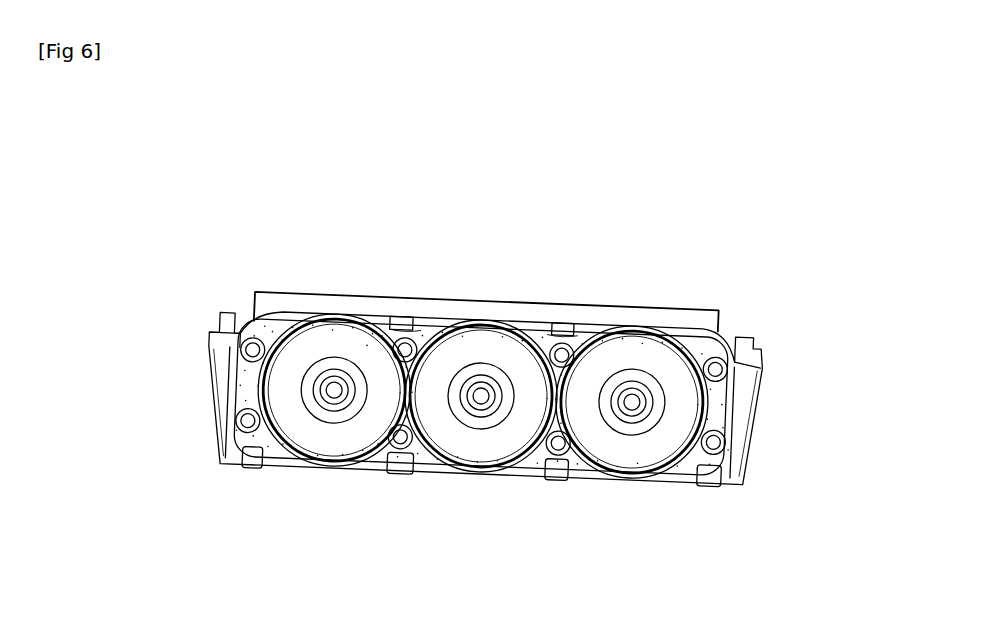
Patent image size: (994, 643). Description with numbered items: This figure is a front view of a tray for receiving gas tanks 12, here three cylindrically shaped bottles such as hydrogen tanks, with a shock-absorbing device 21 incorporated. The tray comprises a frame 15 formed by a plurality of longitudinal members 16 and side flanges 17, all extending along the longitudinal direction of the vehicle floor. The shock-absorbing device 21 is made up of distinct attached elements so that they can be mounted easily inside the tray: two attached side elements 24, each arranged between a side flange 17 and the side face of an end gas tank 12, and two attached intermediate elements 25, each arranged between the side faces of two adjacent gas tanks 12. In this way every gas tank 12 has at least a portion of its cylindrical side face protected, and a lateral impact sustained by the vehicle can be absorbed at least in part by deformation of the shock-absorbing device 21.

The gas tank 12 is at (308, 348).
The frame 15 is at (202, 297).
The longitudinal member 16 is at (397, 468).
The side flange 17 is at (222, 407).
The shock-absorbing device 21 is at (455, 307).
The attached side element 24 is at (230, 381).
The attached intermediate element 25 is at (376, 345).